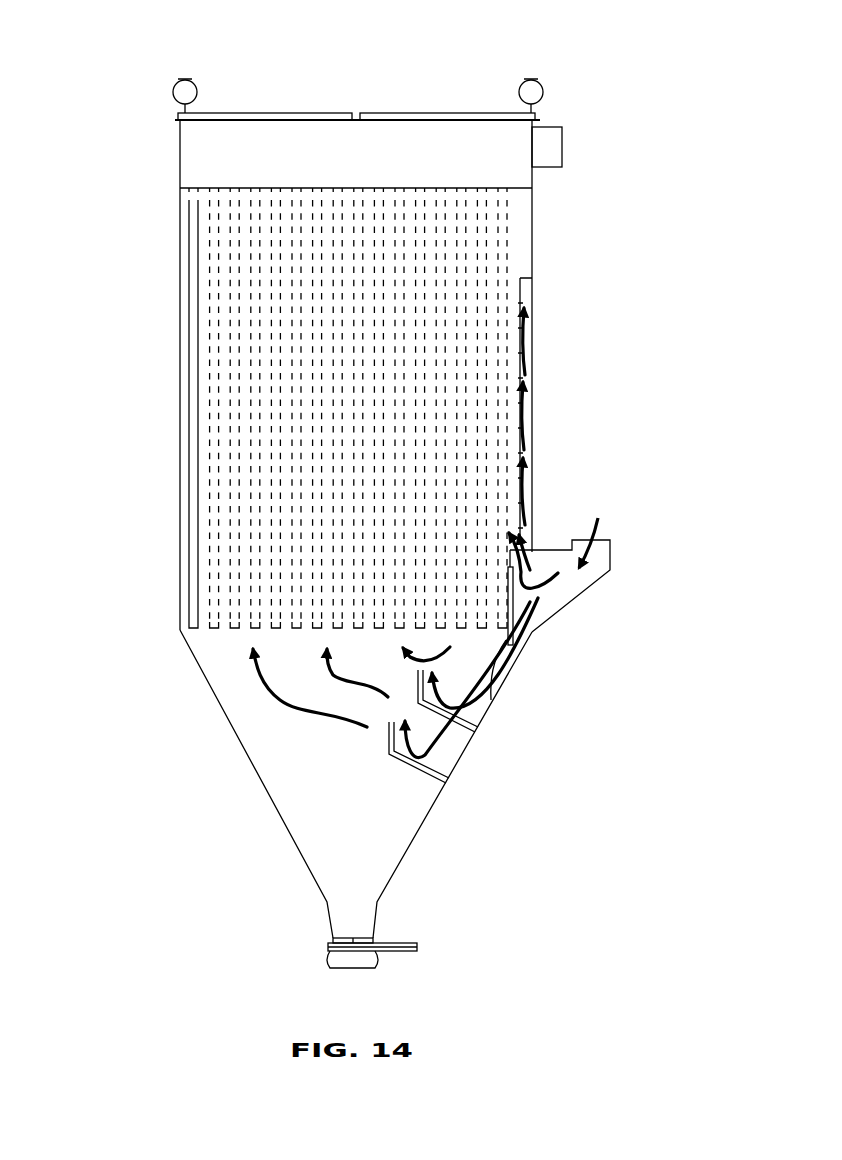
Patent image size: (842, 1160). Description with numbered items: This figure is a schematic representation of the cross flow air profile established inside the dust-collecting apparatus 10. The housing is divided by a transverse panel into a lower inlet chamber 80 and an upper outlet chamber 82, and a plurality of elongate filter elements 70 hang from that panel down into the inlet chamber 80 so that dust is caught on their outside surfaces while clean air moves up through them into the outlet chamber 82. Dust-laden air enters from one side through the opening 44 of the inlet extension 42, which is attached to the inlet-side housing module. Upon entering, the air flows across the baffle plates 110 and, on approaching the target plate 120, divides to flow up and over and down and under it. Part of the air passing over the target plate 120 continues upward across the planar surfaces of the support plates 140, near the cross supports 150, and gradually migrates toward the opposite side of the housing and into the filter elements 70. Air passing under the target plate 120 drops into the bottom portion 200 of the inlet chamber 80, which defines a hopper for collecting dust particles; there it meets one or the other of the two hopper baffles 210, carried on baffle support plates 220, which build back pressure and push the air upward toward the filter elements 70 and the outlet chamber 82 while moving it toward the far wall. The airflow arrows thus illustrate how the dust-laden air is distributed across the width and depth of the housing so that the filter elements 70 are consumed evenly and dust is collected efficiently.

The dust-collecting apparatus 10 is at (641, 87).
The inlet extension 42 is at (585, 600).
The opening of the inlet extension 44 is at (601, 540).
The filter elements 70 is at (270, 490).
The inlet chamber 80 is at (196, 265).
The outlet chamber 82 is at (196, 143).
The baffle plates 110 is at (536, 556).
The target plate 120 is at (497, 690).
The support plates 140 is at (525, 430).
The cross supports 150 is at (520, 295).
The bottom portion 200 is at (281, 757).
The hopper baffles 210 is at (417, 684).
The baffle support plates 220 is at (462, 715).